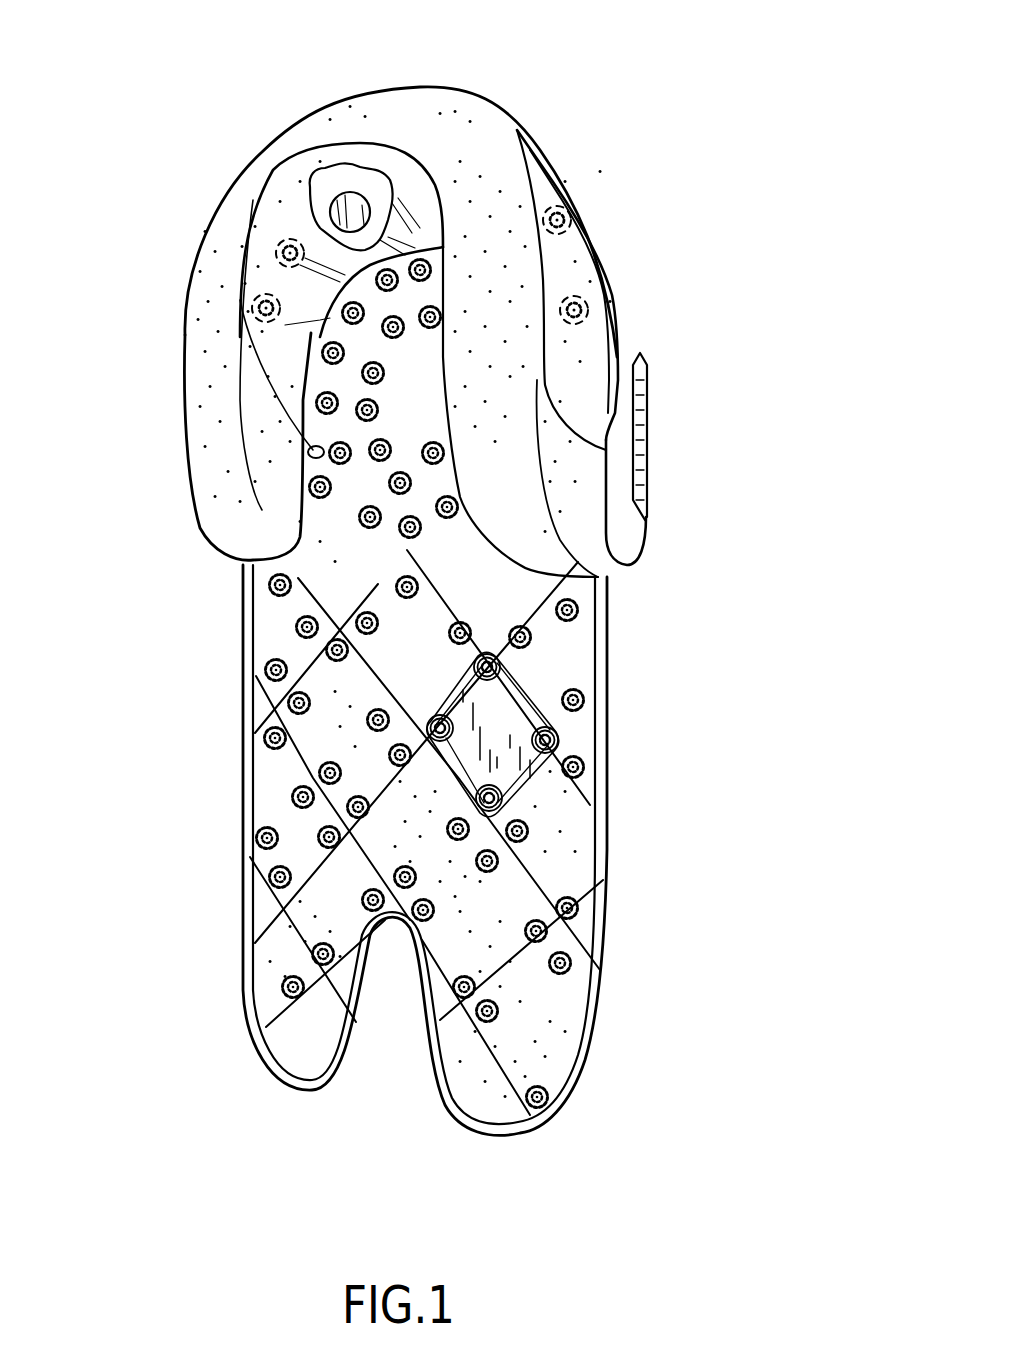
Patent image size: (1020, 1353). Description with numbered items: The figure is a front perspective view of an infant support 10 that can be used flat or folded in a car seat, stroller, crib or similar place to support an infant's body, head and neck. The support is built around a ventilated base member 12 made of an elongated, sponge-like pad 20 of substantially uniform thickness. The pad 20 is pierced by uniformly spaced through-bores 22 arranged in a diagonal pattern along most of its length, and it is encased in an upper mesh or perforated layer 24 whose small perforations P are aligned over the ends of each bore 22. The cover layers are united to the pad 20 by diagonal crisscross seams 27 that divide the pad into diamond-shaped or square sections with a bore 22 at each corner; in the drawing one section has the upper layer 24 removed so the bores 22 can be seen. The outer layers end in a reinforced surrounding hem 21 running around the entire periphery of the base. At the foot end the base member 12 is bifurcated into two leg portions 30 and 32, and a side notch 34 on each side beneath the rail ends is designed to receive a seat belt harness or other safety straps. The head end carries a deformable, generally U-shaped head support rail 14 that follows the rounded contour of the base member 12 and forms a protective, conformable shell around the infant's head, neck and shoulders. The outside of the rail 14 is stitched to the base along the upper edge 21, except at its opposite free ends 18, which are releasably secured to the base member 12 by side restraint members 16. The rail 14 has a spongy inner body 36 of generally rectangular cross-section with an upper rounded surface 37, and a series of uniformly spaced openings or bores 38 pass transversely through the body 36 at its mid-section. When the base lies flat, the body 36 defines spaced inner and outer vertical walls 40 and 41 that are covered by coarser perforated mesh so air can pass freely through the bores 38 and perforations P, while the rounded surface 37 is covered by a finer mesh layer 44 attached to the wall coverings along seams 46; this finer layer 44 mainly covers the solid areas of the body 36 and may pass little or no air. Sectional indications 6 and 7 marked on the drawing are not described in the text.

The section line 6- 6 is at (387, 80).
The section line 7- 7 is at (400, 728).
The infant support 10 is at (225, 708).
The base member 12 is at (245, 922).
The head support rail 14 is at (527, 217).
The side restraint members 16 is at (637, 530).
The free ends 18 is at (213, 530).
The elongated pad 20 is at (520, 720).
The reinforced surrounding edge or hem 21 is at (293, 1073).
The through-bores 22 is at (503, 657).
The upper mesh or perforated layer 24 is at (267, 787).
The seams 27 is at (520, 700).
The leg portion 30 is at (290, 1040).
The leg portion 32 is at (553, 1003).
The side notch 34 is at (313, 448).
The inner body 36 is at (583, 274).
The upper rounded surface 37 is at (213, 297).
The openings or bores 38 is at (347, 207).
The inner vertical wall 40 is at (380, 157).
The outer vertical wall 41 is at (575, 368).
The finer mesh layer 44 is at (473, 123).
The seams 46 is at (570, 400).
The perforations P is at (267, 840).